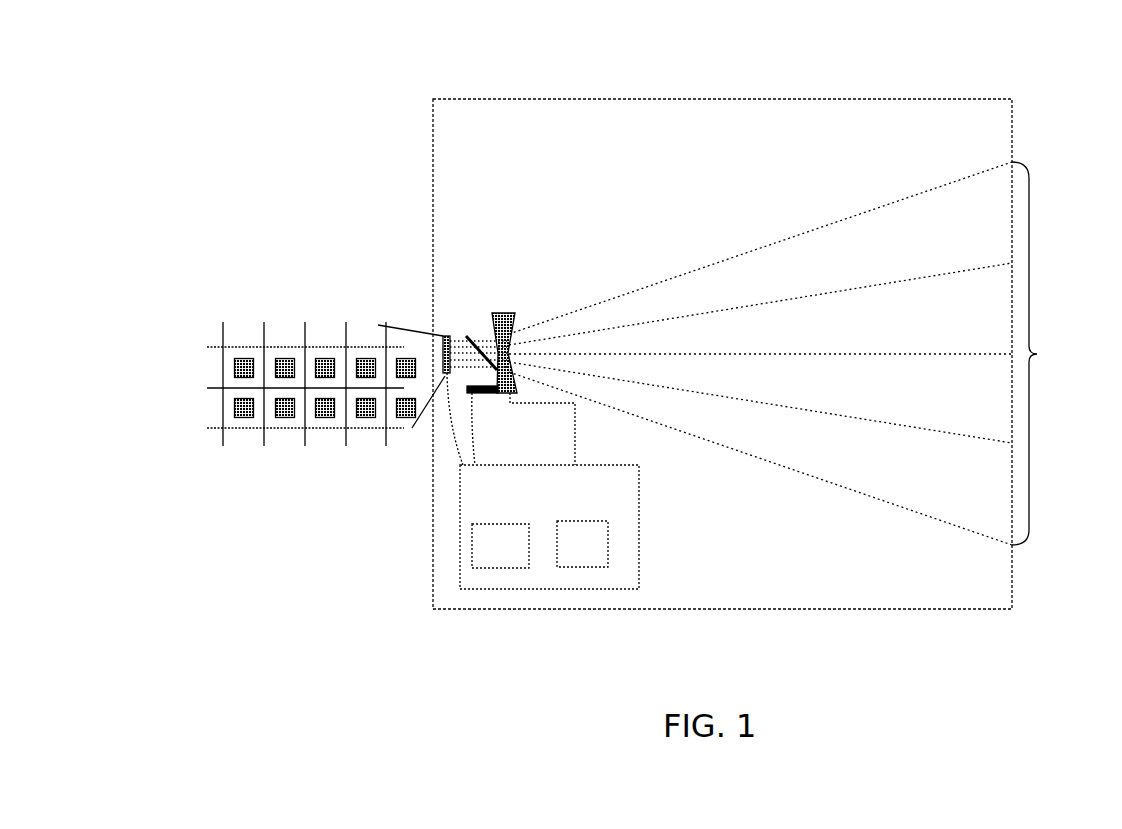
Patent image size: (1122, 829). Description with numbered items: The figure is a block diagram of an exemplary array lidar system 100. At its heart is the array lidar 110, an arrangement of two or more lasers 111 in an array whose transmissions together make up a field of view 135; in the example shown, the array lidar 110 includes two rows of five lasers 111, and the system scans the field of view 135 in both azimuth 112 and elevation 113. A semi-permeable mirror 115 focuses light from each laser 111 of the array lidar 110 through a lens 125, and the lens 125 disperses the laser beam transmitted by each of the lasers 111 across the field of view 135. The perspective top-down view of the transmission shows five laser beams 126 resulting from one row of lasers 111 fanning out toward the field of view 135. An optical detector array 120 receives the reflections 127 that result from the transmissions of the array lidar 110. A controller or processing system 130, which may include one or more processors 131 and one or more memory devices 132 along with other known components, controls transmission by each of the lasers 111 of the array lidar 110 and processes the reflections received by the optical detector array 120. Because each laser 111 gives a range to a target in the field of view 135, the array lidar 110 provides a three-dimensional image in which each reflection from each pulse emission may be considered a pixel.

The array lidar system 100 is at (977, 70).
The array lidar 110 is at (346, 366).
The lasers 111 is at (287, 358).
The azimuth 112 is at (391, 464).
The elevation 113 is at (195, 342).
The semi-permeable mirror 115 is at (480, 347).
The optical detector array 120 is at (482, 402).
The lens 125 is at (508, 315).
The laser beams 126 is at (760, 353).
The reflections 127 is at (770, 238).
The controller or processing system 130 is at (629, 502).
The processors 131 is at (517, 556).
The memory devices 132 is at (600, 556).
The field of view 135 is at (1037, 354).